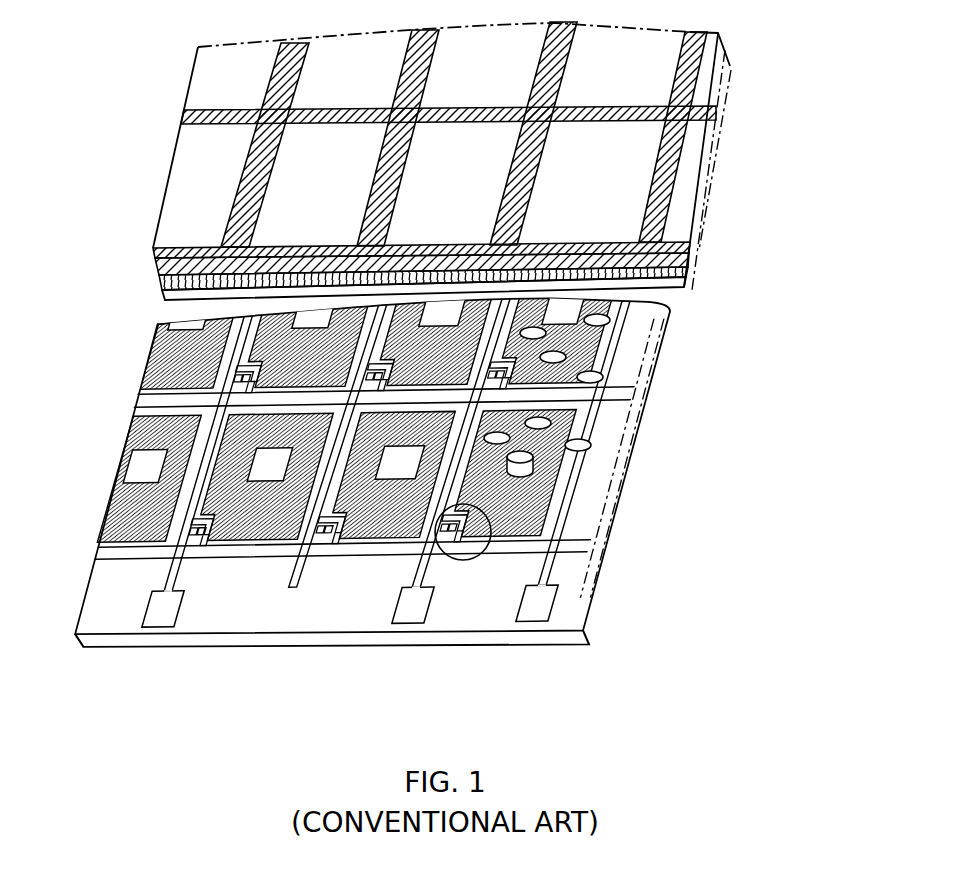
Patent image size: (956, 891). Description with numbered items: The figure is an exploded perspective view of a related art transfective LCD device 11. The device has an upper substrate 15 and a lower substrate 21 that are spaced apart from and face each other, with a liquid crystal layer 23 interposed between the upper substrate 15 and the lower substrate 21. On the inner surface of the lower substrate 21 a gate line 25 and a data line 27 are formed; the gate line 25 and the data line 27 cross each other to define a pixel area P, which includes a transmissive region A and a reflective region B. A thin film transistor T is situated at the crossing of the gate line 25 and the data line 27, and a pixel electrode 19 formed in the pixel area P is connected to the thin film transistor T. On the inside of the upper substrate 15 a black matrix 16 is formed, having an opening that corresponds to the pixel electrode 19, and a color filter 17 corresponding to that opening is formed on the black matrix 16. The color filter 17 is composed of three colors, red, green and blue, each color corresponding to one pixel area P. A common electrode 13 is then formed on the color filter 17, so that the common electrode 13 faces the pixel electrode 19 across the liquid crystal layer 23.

The transfective LCD device 11 is at (442, 500).
The common electrode 13 is at (680, 289).
The upper substrate 15 is at (157, 268).
The black matrix 16 is at (158, 283).
The color filter 17 is at (637, 167).
The pixel electrode 19 is at (113, 547).
The lower substrate 21 is at (315, 640).
The liquid crystal layer 23 is at (605, 377).
The gate line 25 is at (562, 553).
The data line 27 is at (430, 577).
The transmissive region A is at (546, 455).
The pixel area P is at (391, 411).
The reflective region B is at (570, 472).
The thin film transistor T is at (467, 559).